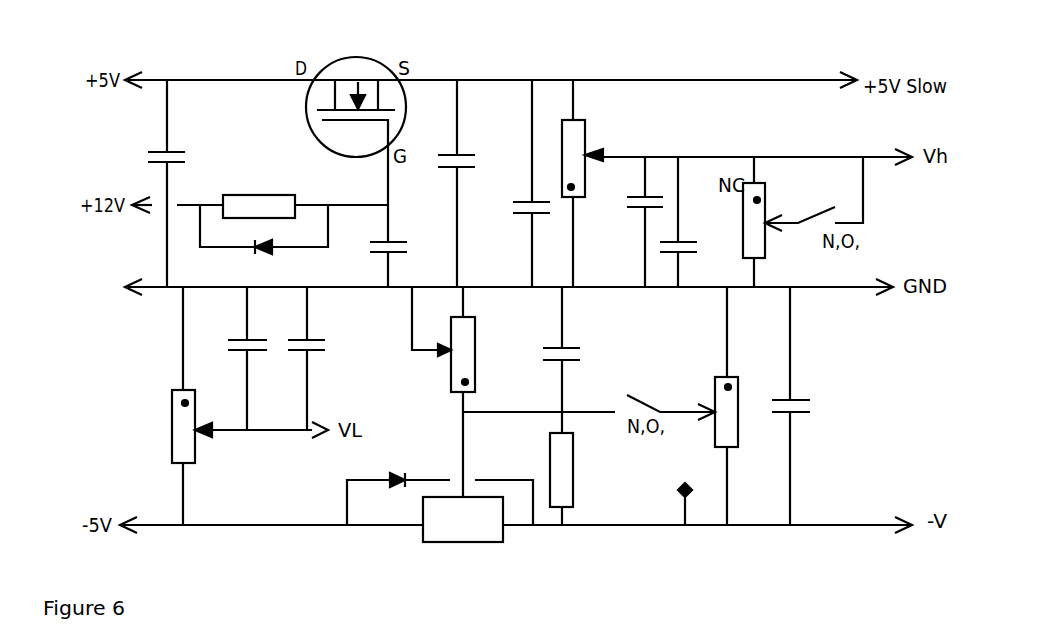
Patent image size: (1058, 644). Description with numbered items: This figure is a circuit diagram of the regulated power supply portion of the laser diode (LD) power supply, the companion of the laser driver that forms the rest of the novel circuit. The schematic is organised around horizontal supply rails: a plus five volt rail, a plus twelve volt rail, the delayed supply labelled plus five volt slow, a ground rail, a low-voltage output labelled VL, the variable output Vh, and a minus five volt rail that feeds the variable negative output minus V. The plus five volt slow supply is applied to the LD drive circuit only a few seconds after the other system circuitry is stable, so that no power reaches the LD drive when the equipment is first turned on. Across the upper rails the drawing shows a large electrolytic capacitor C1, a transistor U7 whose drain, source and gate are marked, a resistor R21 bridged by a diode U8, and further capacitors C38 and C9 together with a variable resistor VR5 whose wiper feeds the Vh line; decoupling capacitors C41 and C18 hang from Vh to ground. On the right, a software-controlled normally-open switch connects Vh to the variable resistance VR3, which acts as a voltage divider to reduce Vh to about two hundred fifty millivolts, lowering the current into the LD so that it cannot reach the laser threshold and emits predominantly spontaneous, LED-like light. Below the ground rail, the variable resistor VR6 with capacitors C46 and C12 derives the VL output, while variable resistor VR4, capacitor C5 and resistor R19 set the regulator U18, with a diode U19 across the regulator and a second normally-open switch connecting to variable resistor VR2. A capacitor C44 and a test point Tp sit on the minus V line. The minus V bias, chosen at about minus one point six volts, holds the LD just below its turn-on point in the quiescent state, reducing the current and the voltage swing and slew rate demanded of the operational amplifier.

The 1000u electrolytic capacitor C1 is at (185, 183).
The MOSFET transistor U7 is at (356, 131).
The 100k resistor R21 is at (259, 195).
The 1N4001 diode U8 is at (264, 240).
The 47u capacitor C38 is at (379, 246).
The 10u electrolytic capacitor C9 is at (525, 183).
The 1k variable resistor VR5 is at (589, 183).
The 10u electrolytic capacitor C41 is at (634, 222).
The 0.1u capacitor C18 is at (690, 222).
The variable resistance VR3 is at (773, 222).
The 1k variable resistor VR6 is at (202, 406).
The 10u electrolytic capacitor C46 is at (237, 358).
The 0.1u capacitor C12 is at (317, 358).
The 100R variable resistor VR4 is at (467, 392).
The BAS16 diode U19 is at (440, 489).
The LM337L voltage regulator U18 is at (463, 520).
The 10u electrolytic capacitor C5 is at (570, 360).
The 220R resistor R19 is at (589, 479).
The 500R variable resistor VR2 is at (697, 406).
The 10u electrolytic capacitor C44 is at (800, 406).
The test point Tp is at (681, 494).